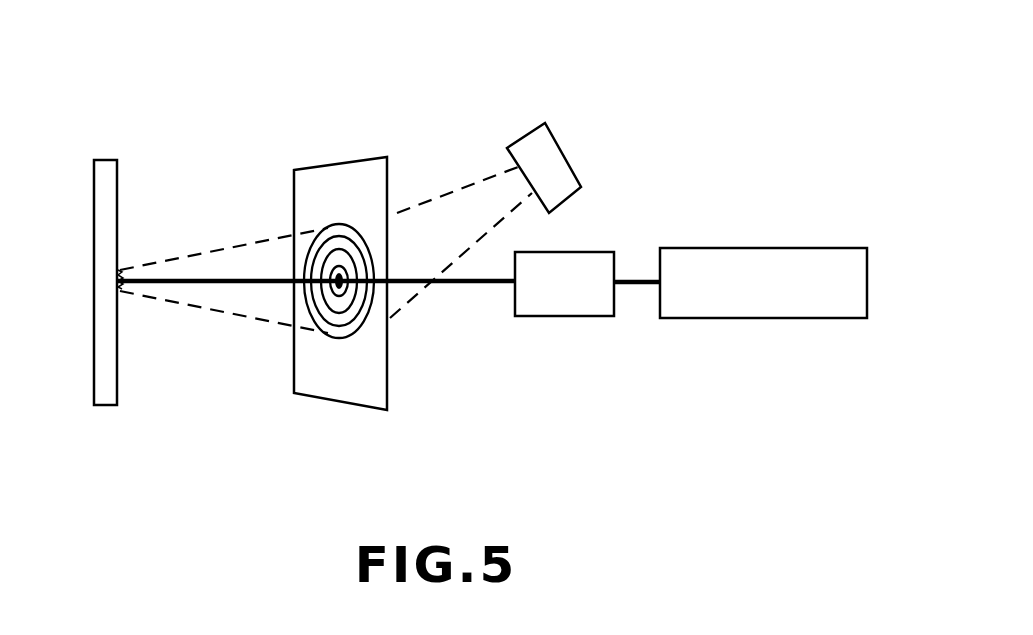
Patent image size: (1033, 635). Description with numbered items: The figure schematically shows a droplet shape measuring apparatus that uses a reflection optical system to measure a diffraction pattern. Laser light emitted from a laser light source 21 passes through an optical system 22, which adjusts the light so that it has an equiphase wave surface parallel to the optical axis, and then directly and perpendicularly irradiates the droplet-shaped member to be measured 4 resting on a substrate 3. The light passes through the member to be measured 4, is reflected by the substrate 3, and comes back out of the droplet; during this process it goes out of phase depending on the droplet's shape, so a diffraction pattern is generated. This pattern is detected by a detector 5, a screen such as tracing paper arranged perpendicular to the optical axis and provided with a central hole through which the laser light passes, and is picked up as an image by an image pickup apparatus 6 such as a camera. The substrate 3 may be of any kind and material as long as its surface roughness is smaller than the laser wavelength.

The substrate 3 is at (105, 160).
The droplet-shaped member to be measured 4 is at (120, 271).
The detector 5 is at (313, 170).
The image pickup apparatus 6 is at (545, 123).
The optical system 22 is at (585, 252).
The laser light source 21 is at (707, 248).